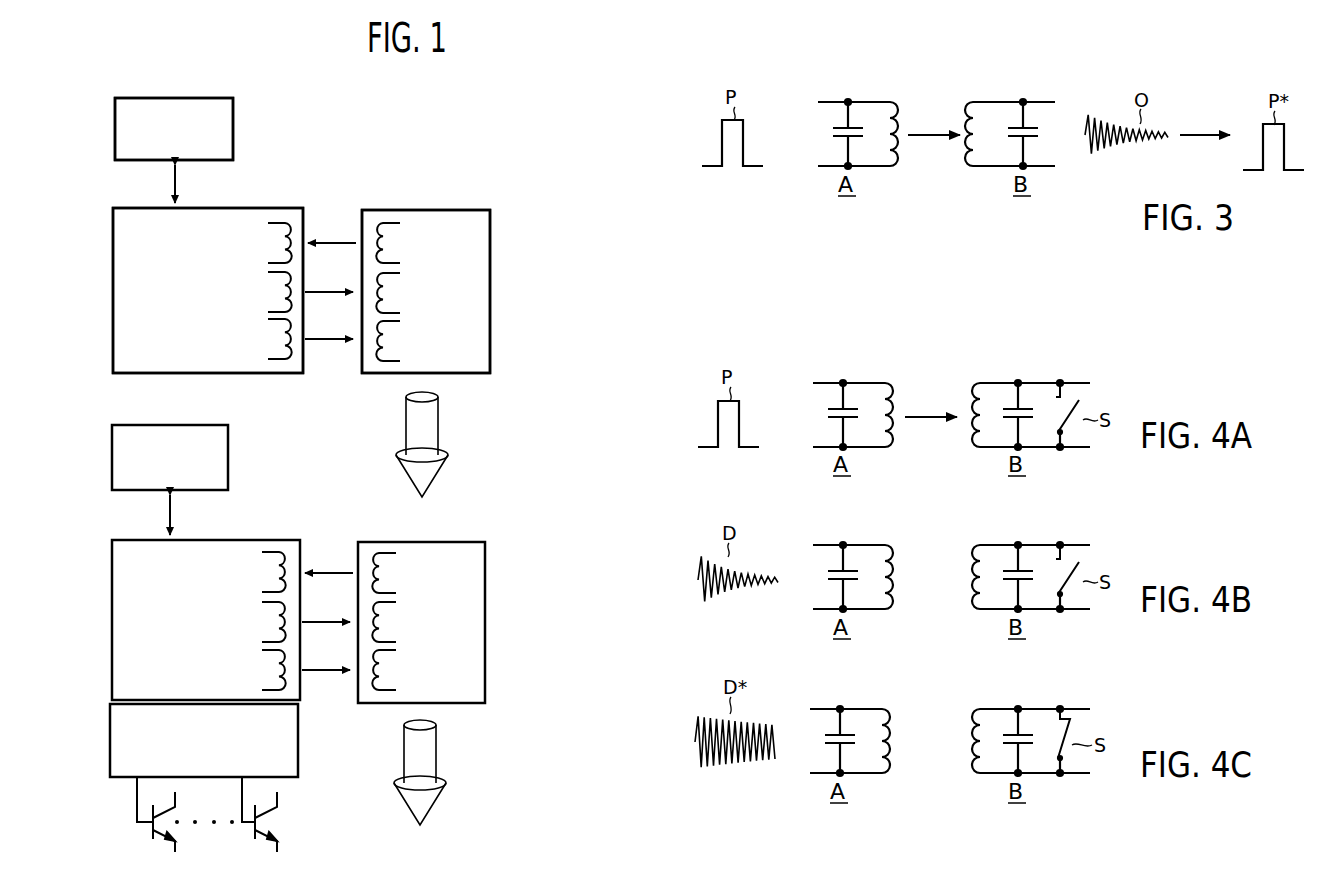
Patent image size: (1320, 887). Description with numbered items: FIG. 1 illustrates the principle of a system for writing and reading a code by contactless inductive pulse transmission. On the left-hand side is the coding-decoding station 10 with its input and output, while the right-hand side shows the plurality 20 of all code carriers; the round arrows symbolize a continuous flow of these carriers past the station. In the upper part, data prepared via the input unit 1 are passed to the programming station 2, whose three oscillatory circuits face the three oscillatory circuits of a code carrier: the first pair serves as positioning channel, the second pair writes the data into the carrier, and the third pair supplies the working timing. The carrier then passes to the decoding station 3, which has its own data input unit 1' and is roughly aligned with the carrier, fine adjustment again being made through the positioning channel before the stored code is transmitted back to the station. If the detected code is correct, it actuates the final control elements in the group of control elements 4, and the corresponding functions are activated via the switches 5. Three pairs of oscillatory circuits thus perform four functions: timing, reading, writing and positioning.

The input unit 1 is at (152, 129).
The data input unit 1' is at (148, 457).
The programming station 2 is at (113, 236).
The decoding station 3 is at (112, 569).
The group of control elements 4 is at (110, 721).
The switches 5 is at (118, 808).
The coding-decoding station 10 is at (232, 90).
The plurality of code carriers 20 is at (432, 195).